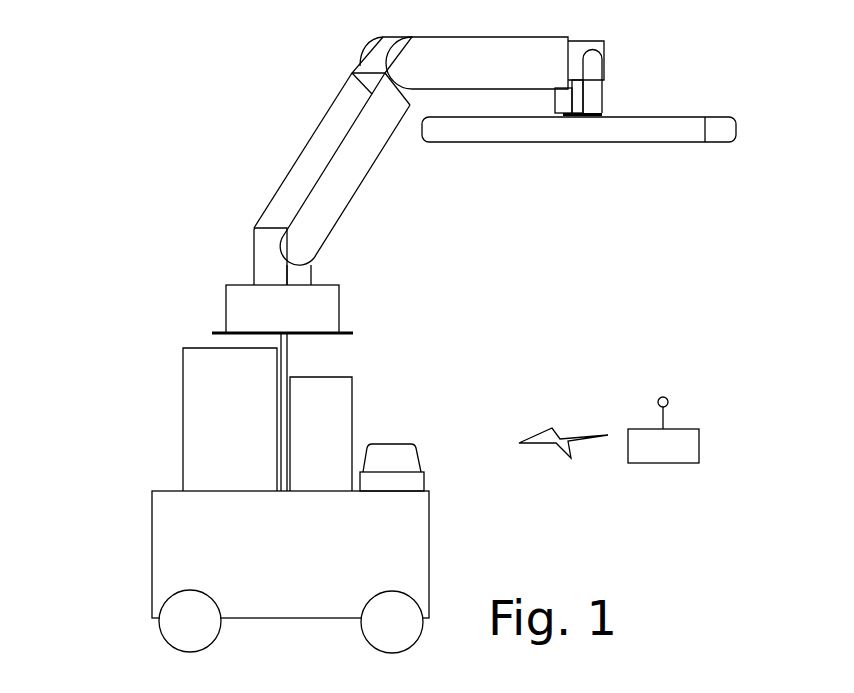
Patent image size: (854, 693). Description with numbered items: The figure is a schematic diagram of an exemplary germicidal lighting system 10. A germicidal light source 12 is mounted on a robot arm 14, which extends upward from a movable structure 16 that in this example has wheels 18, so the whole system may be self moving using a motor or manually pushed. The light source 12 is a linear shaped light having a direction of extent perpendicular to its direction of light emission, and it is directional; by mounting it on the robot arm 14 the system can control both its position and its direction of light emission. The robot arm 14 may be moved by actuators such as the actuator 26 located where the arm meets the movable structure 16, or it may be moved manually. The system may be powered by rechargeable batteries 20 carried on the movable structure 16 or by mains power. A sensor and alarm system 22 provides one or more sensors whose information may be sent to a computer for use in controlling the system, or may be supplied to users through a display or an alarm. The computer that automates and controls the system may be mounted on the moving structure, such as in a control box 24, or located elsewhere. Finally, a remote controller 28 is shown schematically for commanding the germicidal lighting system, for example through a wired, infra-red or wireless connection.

The germicidal lighting system 10 is at (492, 316).
The germicidal light source 12 is at (630, 142).
The robot arm 14 is at (312, 136).
The movable structure 16 is at (430, 527).
The wheels 18 is at (160, 629).
The rechargeable batteries 20 is at (183, 403).
The sensor and alarm system 22 is at (422, 457).
The control box 24 is at (352, 398).
The actuator 26 is at (268, 264).
The remote controller 28 is at (700, 436).